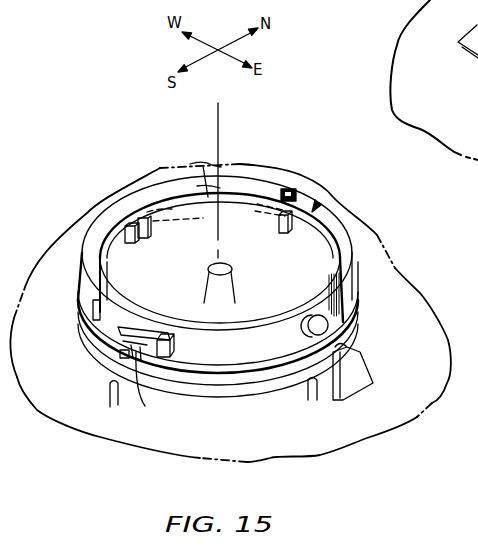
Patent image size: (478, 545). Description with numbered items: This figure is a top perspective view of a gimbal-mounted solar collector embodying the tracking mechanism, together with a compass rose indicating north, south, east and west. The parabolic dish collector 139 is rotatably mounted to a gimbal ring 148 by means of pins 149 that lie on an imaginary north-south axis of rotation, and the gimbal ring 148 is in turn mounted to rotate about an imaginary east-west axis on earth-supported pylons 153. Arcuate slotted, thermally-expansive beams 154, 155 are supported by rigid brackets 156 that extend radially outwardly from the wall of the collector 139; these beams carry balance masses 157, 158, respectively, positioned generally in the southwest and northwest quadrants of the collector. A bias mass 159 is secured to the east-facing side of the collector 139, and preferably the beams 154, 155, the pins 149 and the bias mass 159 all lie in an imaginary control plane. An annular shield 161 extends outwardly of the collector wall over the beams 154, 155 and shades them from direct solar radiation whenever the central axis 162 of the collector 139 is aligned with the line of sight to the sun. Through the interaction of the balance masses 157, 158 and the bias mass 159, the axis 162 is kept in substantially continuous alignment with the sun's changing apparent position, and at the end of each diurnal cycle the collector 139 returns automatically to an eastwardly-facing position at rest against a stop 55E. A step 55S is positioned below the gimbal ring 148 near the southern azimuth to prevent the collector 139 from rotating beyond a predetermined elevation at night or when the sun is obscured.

The parabolic dish collector 139 is at (317, 205).
The gimbal ring 148 is at (344, 265).
The pins 149 is at (156, 392).
The earth-supported pylons 153 is at (357, 378).
The arcuate slotted thermally-expansive beam 154 is at (125, 347).
The arcuate slotted thermally-expansive beam 155 is at (162, 170).
The rigid brackets 156 is at (98, 228).
The balance mass 157 is at (90, 314).
The balance mass 158 is at (201, 164).
The bias mass 159 is at (318, 325).
The annular shield 161 is at (108, 200).
The central axis 162 is at (218, 131).
The stop 55E is at (309, 400).
The step 55S is at (105, 410).